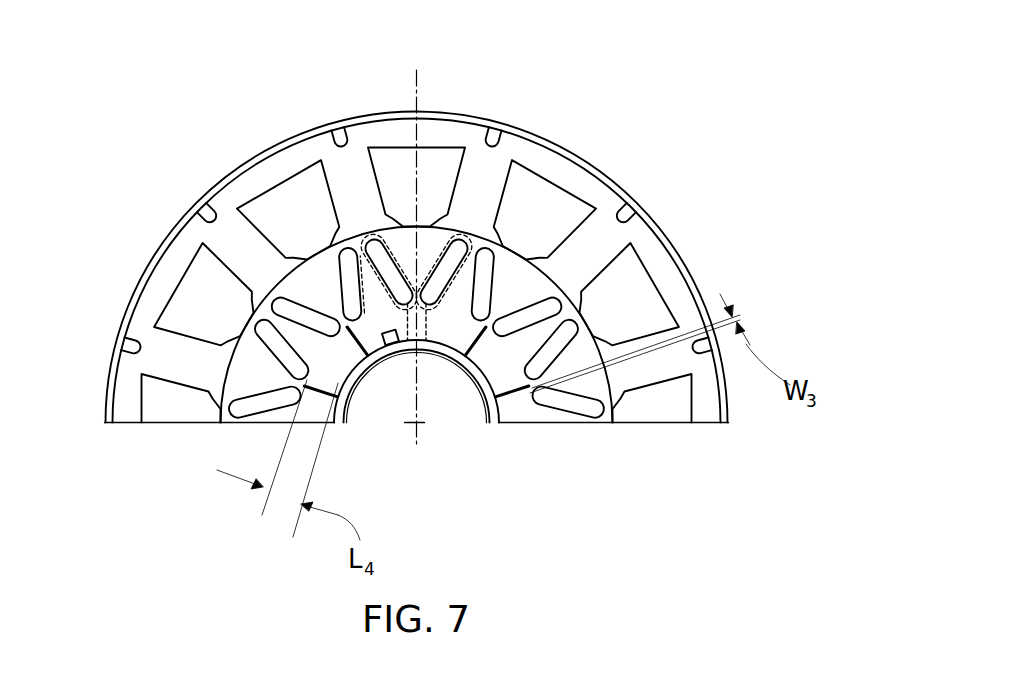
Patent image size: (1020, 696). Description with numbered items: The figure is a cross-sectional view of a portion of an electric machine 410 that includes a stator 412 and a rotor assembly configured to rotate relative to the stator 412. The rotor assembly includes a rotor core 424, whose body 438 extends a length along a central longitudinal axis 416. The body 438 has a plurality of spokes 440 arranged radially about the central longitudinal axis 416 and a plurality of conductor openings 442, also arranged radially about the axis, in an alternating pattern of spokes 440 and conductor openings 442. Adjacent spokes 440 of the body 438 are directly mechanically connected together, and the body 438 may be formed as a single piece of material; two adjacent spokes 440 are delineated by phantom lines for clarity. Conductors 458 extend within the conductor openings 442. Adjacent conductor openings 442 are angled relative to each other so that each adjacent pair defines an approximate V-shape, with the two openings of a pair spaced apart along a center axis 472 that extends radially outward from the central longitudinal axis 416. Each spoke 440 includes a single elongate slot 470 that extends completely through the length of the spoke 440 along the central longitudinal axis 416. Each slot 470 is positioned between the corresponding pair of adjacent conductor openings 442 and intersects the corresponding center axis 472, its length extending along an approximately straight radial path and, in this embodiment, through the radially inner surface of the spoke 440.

The electric machine 410 is at (417, 404).
The stator 412 is at (417, 423).
The central longitudinal axis 416 is at (416, 422).
The rotor core 424 is at (416, 273).
The body 438 is at (181, 422).
The spokes 440 is at (422, 310).
The conductor openings 442 is at (403, 328).
The conductors 458 is at (567, 402).
The slots 470 is at (416, 350).
The center axis 472 is at (420, 98).